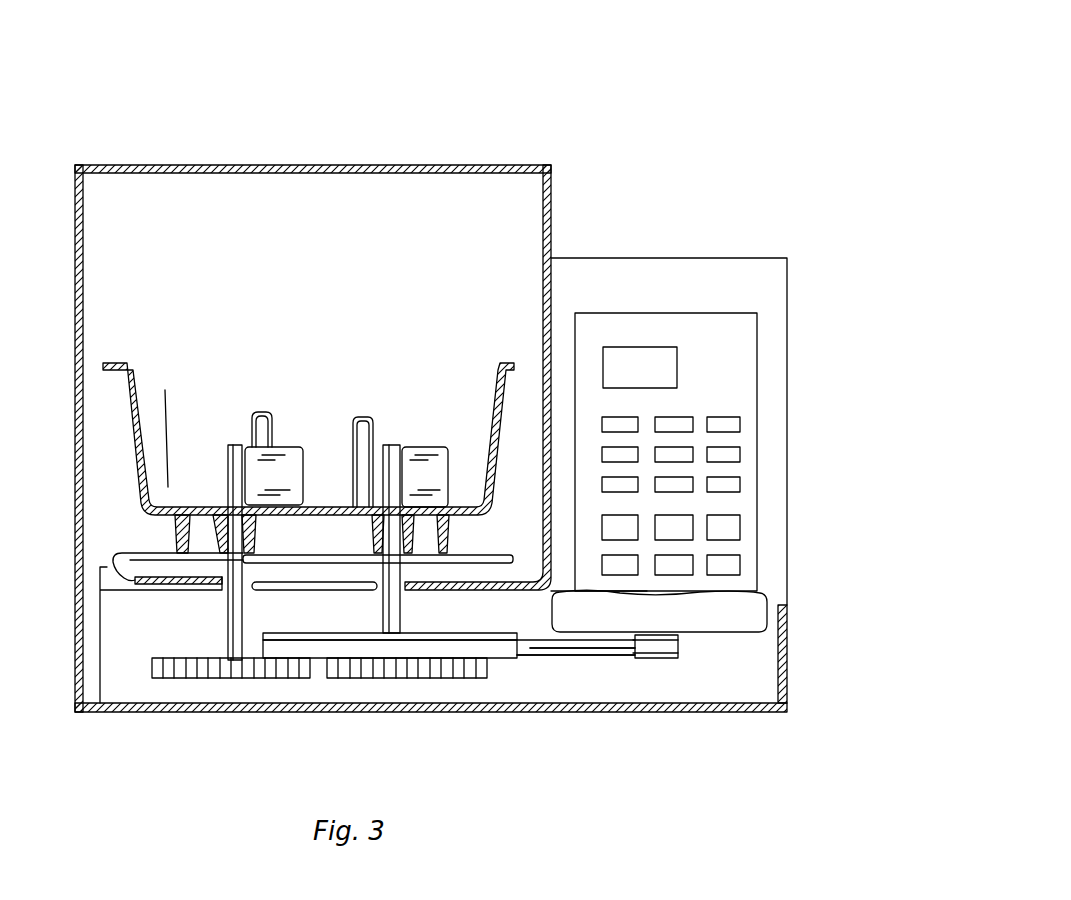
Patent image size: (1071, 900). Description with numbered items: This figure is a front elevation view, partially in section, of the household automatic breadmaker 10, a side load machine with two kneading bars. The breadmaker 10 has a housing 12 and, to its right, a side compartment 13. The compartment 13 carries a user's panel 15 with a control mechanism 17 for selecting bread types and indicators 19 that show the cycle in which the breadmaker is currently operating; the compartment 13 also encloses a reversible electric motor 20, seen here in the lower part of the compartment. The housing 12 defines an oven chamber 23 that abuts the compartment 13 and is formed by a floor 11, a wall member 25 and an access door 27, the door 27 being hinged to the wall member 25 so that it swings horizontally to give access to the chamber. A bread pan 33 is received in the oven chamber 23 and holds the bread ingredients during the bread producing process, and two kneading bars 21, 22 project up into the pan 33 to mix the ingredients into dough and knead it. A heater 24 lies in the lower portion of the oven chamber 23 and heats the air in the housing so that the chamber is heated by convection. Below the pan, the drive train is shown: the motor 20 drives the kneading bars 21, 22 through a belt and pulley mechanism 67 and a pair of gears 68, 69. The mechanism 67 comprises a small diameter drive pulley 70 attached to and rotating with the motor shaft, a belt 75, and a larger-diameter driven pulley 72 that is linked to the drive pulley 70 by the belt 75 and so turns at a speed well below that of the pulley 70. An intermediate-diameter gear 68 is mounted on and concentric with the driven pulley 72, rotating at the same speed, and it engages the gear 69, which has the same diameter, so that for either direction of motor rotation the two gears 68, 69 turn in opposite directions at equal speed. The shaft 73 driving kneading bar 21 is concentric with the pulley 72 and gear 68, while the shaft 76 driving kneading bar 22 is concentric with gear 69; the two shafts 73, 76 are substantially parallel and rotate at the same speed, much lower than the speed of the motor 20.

The household automatic breadmaker 10 is at (658, 84).
The floor 11 is at (118, 556).
The housing 12 is at (556, 181).
The side compartment 13 is at (775, 278).
The user's panel 15 is at (737, 343).
The control mechanism 17 is at (712, 470).
The indicators 19 is at (712, 555).
The reversible electric motor 20 is at (748, 618).
The kneading bar 21 is at (417, 448).
The kneading bar 22 is at (278, 448).
The oven chamber 23 is at (165, 216).
The heater 24 is at (492, 557).
The wall member 25 is at (262, 168).
The access door 27 is at (72, 268).
The bread pan 33 is at (128, 428).
The belt and pulley mechanism 67 is at (580, 678).
The gear 68 is at (440, 673).
The gear 69 is at (197, 670).
The drive pulley 70 is at (675, 655).
The driven pulley 72 is at (496, 640).
The shaft 73 is at (385, 618).
The belt 75 is at (608, 648).
The shaft 76 is at (233, 630).